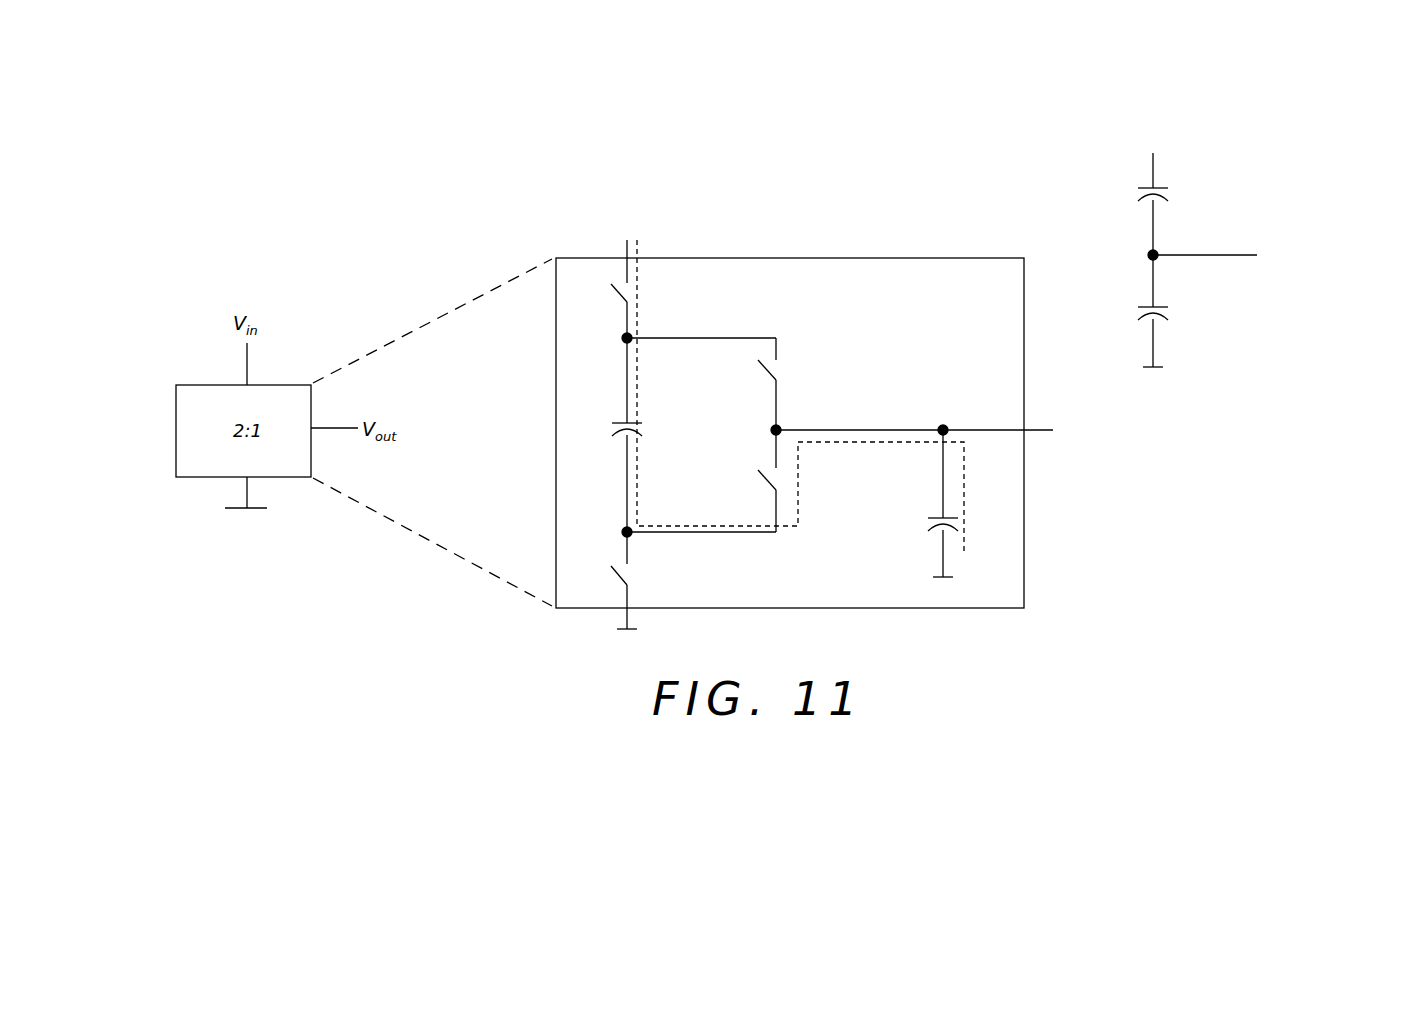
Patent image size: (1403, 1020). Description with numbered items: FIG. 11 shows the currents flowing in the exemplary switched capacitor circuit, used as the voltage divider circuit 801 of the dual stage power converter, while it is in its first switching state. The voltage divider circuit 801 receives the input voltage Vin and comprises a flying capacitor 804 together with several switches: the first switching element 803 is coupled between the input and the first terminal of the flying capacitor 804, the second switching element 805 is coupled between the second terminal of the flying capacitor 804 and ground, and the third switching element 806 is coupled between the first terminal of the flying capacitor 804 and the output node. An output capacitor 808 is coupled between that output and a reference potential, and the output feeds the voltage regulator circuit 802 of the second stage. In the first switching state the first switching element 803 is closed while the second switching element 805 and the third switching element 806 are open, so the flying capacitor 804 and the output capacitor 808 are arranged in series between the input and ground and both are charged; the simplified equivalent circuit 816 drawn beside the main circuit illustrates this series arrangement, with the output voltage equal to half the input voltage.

The voltage divider circuit 801 is at (775, 184).
The voltage regulator circuit 802 is at (782, 479).
The first switching element 803 is at (633, 291).
The flying capacitor 804 is at (640, 436).
The second switching element 805 is at (633, 575).
The third switching element 806 is at (782, 369).
The output capacitor 808 is at (952, 532).
The phase phi1 equivalent circuit 816 is at (1270, 64).